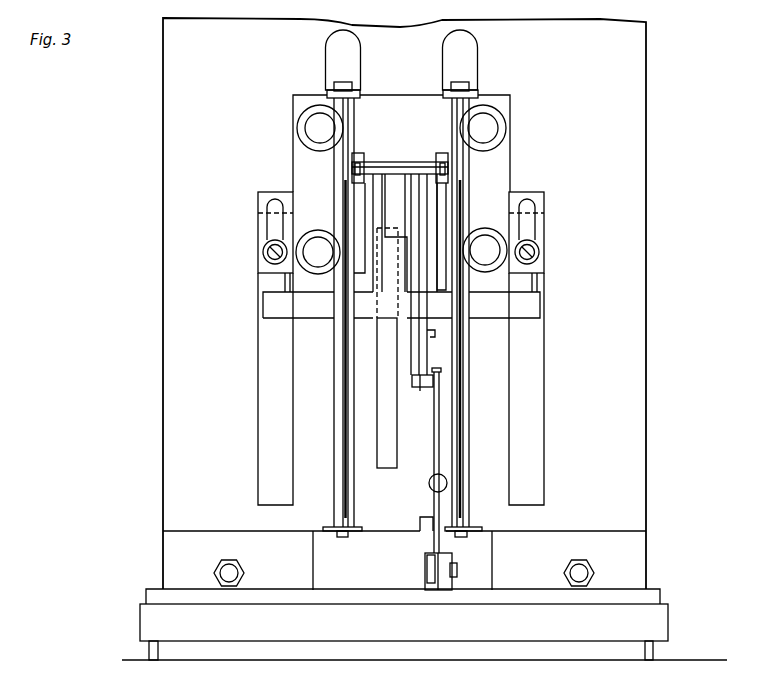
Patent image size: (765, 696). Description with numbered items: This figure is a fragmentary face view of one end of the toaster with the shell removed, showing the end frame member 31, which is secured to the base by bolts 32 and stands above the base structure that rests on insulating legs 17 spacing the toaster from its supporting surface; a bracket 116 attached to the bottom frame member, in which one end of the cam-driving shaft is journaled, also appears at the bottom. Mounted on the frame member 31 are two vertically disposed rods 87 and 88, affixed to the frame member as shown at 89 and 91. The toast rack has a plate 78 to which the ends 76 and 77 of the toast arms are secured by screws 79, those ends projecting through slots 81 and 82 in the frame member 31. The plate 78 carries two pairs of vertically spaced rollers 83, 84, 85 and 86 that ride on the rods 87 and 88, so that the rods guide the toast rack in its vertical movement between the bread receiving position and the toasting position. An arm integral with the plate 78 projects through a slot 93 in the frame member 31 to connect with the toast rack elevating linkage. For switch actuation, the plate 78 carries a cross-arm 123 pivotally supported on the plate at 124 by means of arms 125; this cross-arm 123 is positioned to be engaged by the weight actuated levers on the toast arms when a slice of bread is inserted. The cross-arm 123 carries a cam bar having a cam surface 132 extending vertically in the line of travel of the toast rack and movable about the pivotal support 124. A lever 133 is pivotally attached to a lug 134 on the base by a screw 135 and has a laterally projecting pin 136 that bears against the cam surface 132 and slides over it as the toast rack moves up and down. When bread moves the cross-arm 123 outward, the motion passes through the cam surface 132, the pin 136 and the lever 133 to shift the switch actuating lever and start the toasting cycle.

The side frame member 31 is at (404, 303).
The bracket 116 is at (424, 624).
The legs 17 is at (655, 652).
The bolts 32 is at (590, 549).
The plate 78 is at (500, 167).
The rod attachment 89 is at (481, 84).
The roller 85 is at (300, 116).
The roller 86 is at (318, 228).
The roller 83 is at (498, 122).
The roller 84 is at (486, 228).
The vertical rod 88 is at (340, 395).
The vertical rod 87 is at (470, 410).
The rod attachment 91 is at (477, 528).
The toast arm end 77 is at (260, 222).
The toast arm end 76 is at (543, 212).
The screws 79 is at (541, 261).
The slot 82 is at (265, 364).
The slot 81 is at (538, 347).
The cross-arm 123 is at (530, 305).
The pivotal support 124 is at (428, 158).
The arms 125 is at (427, 233).
The cam surface 132 is at (432, 274).
The pin 136 is at (416, 394).
The slot 93 is at (398, 408).
The lever 133 is at (437, 456).
The lug 134 is at (443, 588).
The screw 135 is at (428, 586).